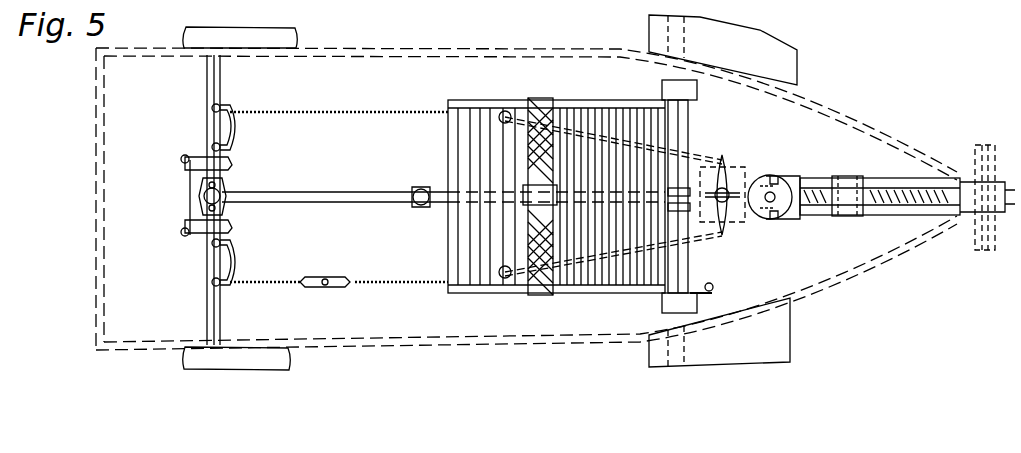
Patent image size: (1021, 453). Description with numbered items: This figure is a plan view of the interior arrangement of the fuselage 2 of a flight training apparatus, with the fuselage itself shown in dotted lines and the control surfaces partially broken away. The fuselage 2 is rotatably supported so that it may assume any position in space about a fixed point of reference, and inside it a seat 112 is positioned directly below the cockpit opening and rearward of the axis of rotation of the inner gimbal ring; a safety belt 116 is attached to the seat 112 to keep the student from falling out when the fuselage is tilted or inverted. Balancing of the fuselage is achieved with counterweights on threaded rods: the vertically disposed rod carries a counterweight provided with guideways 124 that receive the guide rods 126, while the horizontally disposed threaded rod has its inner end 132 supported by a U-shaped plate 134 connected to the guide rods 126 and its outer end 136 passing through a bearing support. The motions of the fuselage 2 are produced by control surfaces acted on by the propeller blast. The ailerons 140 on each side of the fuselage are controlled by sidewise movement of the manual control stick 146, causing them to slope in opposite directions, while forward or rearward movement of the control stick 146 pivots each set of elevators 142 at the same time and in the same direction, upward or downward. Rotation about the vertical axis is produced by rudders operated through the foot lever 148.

The fuselage 2 is at (408, 50).
The seat 112 is at (495, 100).
The safety belt 116 is at (540, 172).
The guideways 124 is at (770, 178).
The guide rods 126 is at (770, 180).
The inner end 132 is at (808, 178).
The U-shaped plate 134 is at (808, 210).
The outer end 136 is at (975, 178).
The ailerons 140 is at (288, 36).
The elevators 142 is at (786, 48).
The control stick 146 is at (410, 192).
The foot lever 148 is at (228, 130).